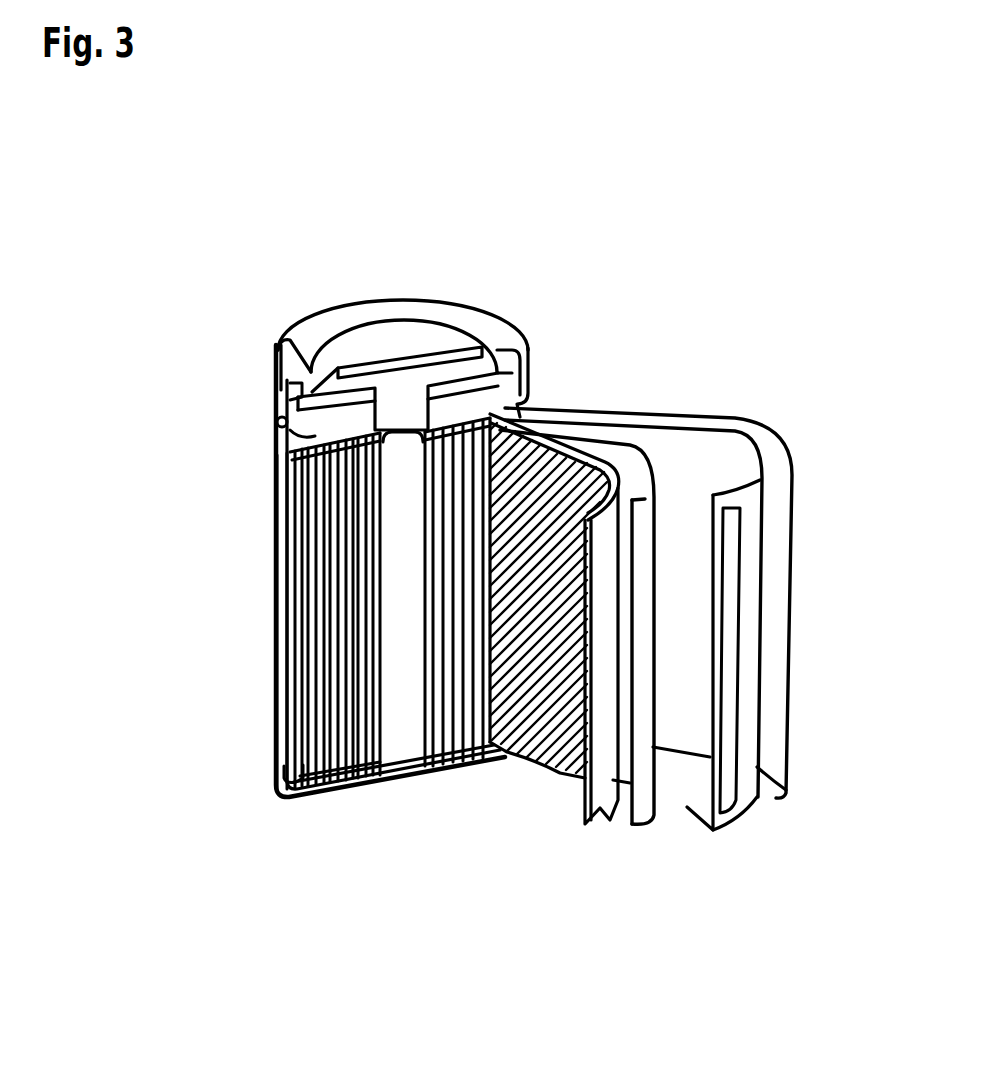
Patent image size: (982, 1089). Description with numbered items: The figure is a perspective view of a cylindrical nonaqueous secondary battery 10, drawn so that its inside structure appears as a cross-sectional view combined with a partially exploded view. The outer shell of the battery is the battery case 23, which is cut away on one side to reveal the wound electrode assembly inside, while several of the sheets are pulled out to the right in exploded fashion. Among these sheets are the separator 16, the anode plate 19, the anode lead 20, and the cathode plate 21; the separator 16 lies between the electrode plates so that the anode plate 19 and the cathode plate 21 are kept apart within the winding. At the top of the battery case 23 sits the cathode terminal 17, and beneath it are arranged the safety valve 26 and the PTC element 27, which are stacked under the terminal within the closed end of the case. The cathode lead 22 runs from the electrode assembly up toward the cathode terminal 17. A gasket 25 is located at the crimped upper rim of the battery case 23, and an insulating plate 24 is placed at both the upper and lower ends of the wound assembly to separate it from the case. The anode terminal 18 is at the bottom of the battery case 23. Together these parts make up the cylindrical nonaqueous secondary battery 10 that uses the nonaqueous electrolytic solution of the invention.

The cylindrical nonaqueous secondary battery 10 is at (561, 337).
The separator 16 is at (667, 428).
The cathode terminal 17 is at (362, 347).
The anode terminal 18 is at (333, 791).
The anode plate 19 is at (745, 570).
The anode lead 20 is at (728, 702).
The cathode plate 21 is at (600, 808).
The cathode lead 22 is at (528, 392).
The battery case 23 is at (276, 598).
The insulating plate 24 is at (280, 437).
The gasket 25 is at (280, 342).
The safety valve 26 is at (395, 380).
The PTC element 27 is at (463, 330).